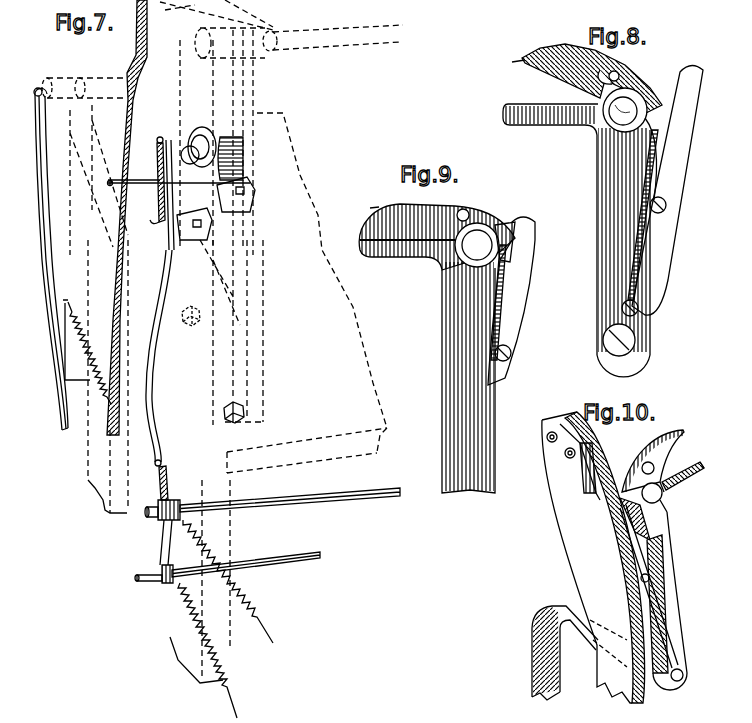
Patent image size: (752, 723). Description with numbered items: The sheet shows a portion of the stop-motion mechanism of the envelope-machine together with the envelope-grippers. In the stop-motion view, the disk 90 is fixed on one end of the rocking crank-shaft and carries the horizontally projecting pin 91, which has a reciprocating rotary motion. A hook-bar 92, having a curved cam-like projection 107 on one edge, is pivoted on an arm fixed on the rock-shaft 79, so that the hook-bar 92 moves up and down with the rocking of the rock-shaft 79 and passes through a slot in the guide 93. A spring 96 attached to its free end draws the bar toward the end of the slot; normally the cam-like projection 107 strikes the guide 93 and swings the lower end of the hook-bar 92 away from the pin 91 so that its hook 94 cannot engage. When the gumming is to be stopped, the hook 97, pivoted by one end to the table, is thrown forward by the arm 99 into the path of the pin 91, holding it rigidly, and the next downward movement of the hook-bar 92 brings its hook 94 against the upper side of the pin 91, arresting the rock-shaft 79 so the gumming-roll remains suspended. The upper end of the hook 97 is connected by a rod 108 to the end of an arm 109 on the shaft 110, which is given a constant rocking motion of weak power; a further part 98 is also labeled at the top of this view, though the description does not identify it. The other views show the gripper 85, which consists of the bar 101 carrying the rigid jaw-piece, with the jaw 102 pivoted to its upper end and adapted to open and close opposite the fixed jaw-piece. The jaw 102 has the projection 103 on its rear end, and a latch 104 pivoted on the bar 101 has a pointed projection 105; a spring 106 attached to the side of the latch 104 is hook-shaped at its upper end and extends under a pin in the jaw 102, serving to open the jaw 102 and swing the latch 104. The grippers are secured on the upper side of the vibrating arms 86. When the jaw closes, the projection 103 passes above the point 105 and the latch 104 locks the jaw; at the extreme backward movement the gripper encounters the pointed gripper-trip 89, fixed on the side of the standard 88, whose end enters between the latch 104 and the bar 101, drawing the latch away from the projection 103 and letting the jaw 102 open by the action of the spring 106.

In FIG. 7, the rock-shaft 79 is at (281, 29).
In FIG. 8, the gripper 85 is at (507, 65).
In FIG. 9, the gripper 85 is at (364, 211).
In FIG. 10, the gripper 85 is at (684, 434).
In FIG. 10, the vibrating arm 86 is at (530, 650).
In FIG. 10, the standard 88 is at (556, 549).
In FIG. 10, the gripper-trip 89 is at (586, 418).
In FIG. 7, the disk 90 is at (201, 127).
In FIG. 7, the pin 91 is at (156, 195).
In FIG. 7, the hook-bar 92 is at (126, 251).
In FIG. 7, the guide 93 is at (143, 97).
In FIG. 7, the hook 94 is at (122, 178).
In FIG. 7, the spring 96 is at (87, 352).
In FIG. 7, the hook 97 is at (157, 205).
In FIG. 7, the arm 98 is at (191, 6).
In FIG. 7, the arm 99 is at (160, 492).
In FIG. 8, the bar 101 is at (600, 188).
In FIG. 9, the bar 101 is at (450, 377).
In FIG. 10, the bar 101 is at (668, 552).
In FIG. 8, the jaw 102 is at (556, 77).
In FIG. 9, the jaw 102 is at (360, 240).
In FIG. 10, the jaw 102 is at (662, 470).
In FIG. 8, the projection 103 is at (649, 108).
In FIG. 9, the projection 103 is at (500, 226).
In FIG. 10, the projection 103 is at (665, 505).
In FIG. 8, the latch 104 is at (672, 158).
In FIG. 9, the latch 104 is at (520, 272).
In FIG. 10, the latch 104 is at (628, 528).
In FIG. 8, the pointed projection 105 is at (652, 96).
In FIG. 9, the pointed projection 105 is at (507, 250).
In FIG. 10, the pointed projection 105 is at (625, 507).
In FIG. 8, the spring 106 is at (600, 73).
In FIG. 9, the spring 106 is at (470, 211).
In FIG. 7, the cam-like projection 107 is at (122, 62).
In FIG. 7, the rod 108 is at (168, 258).
In FIG. 7, the arm 109 is at (224, 594).
In FIG. 7, the shaft 110 is at (286, 533).